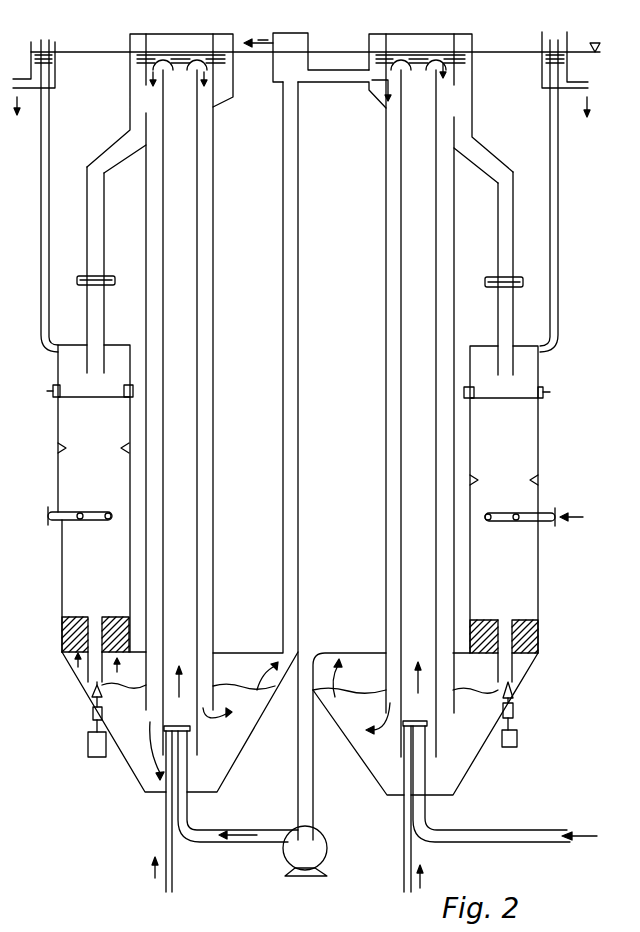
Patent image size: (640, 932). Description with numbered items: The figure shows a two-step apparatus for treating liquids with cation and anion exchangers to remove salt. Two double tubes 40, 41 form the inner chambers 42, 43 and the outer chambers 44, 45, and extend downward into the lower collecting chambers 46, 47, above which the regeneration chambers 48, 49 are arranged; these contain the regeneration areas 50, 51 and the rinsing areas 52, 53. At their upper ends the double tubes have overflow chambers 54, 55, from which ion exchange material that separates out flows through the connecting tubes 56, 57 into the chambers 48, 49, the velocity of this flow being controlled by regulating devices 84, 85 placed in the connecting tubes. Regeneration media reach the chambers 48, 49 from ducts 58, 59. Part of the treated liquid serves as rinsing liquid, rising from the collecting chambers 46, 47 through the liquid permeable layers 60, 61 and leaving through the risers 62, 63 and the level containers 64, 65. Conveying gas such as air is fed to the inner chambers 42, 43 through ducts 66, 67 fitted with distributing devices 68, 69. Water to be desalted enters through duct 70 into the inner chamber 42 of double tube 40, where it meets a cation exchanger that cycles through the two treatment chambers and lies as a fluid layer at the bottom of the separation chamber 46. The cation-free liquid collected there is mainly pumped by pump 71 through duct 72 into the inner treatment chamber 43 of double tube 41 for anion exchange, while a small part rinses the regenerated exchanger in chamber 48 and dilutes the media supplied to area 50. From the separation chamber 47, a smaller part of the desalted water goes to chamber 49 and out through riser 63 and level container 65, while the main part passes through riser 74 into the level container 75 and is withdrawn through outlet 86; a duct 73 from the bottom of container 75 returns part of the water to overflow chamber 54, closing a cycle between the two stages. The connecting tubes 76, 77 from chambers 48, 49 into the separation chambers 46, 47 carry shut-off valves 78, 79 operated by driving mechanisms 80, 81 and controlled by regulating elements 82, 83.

The double tube 40 is at (385, 223).
The double tube 41 is at (215, 182).
The inner chamber 42 is at (410, 190).
The inner chamber 43 is at (190, 218).
The outer chamber 44 is at (392, 293).
The outer chamber 45 is at (203, 295).
The lower collecting chamber 46 is at (362, 694).
The lower collecting chamber 47 is at (230, 694).
The regeneration chamber 48 is at (539, 565).
The regeneration chamber 49 is at (62, 575).
The regeneration area 50 is at (507, 499).
The regeneration area 51 is at (90, 498).
The rinsing area 52 is at (504, 607).
The rinsing area 53 is at (98, 594).
The overflow chamber 54 is at (473, 67).
The overflow chamber 55 is at (131, 85).
The connecting tube 56 is at (512, 198).
The connecting tube 57 is at (93, 202).
The duct 58 is at (510, 522).
The duct 59 is at (88, 521).
The liquid permeable layer 60 is at (539, 633).
The liquid permeable layer 61 is at (68, 633).
The riser 62 is at (559, 296).
The riser 63 is at (41, 305).
The level container 64 is at (568, 67).
The level container 65 is at (55, 68).
The duct 66 is at (404, 878).
The duct 67 is at (173, 875).
The distributing device 68 is at (425, 725).
The distributing device 69 is at (193, 728).
The duct 70 is at (582, 827).
The pump 71 is at (320, 869).
The duct 72 is at (252, 843).
The duct 73 is at (323, 76).
The riser 74 is at (290, 256).
The level container 75 is at (309, 43).
The connecting tube 76 is at (508, 667).
The connecting tube 77 is at (92, 665).
The shut-off valve 78 is at (503, 692).
The shut-off valve 79 is at (93, 713).
The driving mechanism 80 is at (88, 745).
The driving mechanism 81 is at (518, 738).
The regulating element 82 is at (538, 481).
The regulating element 83 is at (56, 447).
The regulating device 84 is at (520, 278).
The regulating device 85 is at (105, 277).
The outlet 86 is at (257, 52).